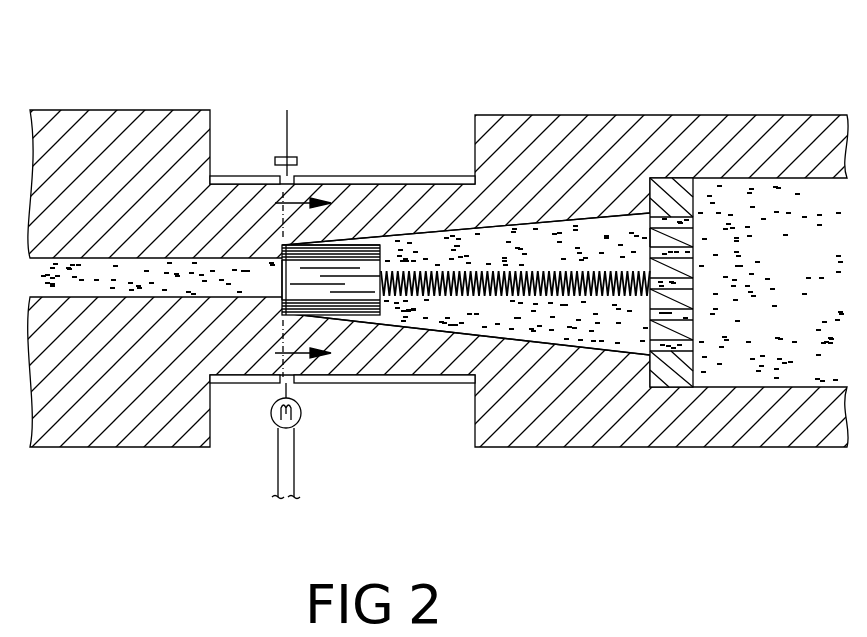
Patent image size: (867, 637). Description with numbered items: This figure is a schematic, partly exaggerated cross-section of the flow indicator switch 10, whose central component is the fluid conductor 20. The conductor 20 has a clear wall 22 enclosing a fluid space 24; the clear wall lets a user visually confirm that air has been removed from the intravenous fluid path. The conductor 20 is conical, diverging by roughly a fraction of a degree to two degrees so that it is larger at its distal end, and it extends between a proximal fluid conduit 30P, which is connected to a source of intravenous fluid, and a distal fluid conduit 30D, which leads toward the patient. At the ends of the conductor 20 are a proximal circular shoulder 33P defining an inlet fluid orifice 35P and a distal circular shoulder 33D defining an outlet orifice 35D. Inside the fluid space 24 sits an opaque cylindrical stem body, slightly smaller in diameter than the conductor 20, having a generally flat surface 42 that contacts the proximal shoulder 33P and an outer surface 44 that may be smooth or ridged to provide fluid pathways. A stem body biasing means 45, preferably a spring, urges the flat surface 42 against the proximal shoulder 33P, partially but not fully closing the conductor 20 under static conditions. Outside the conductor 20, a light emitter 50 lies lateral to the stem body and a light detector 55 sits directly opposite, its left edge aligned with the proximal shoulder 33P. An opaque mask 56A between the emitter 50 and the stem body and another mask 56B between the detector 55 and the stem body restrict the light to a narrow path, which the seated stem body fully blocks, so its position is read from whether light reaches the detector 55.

The flow indicator switch 10 is at (372, 162).
The fluid conductor 20 is at (531, 354).
The clear wall 22 is at (558, 220).
The fluid space 24 is at (575, 260).
The proximal fluid conduit 30P is at (65, 263).
The distal fluid conduit 30D is at (757, 378).
The proximal circular shoulder 33P is at (282, 277).
The distal circular shoulder 33D is at (650, 195).
The inlet fluid orifice 35P is at (256, 286).
The outlet orifice 35D is at (646, 238).
The flat surface 42 is at (282, 257).
The outer surface 44 is at (305, 247).
The stem body biasing means 45 is at (554, 300).
The light emitter 50 is at (301, 416).
The light detector 55 is at (286, 190).
The opaque mask 56A is at (260, 385).
The mask 56B is at (264, 174).